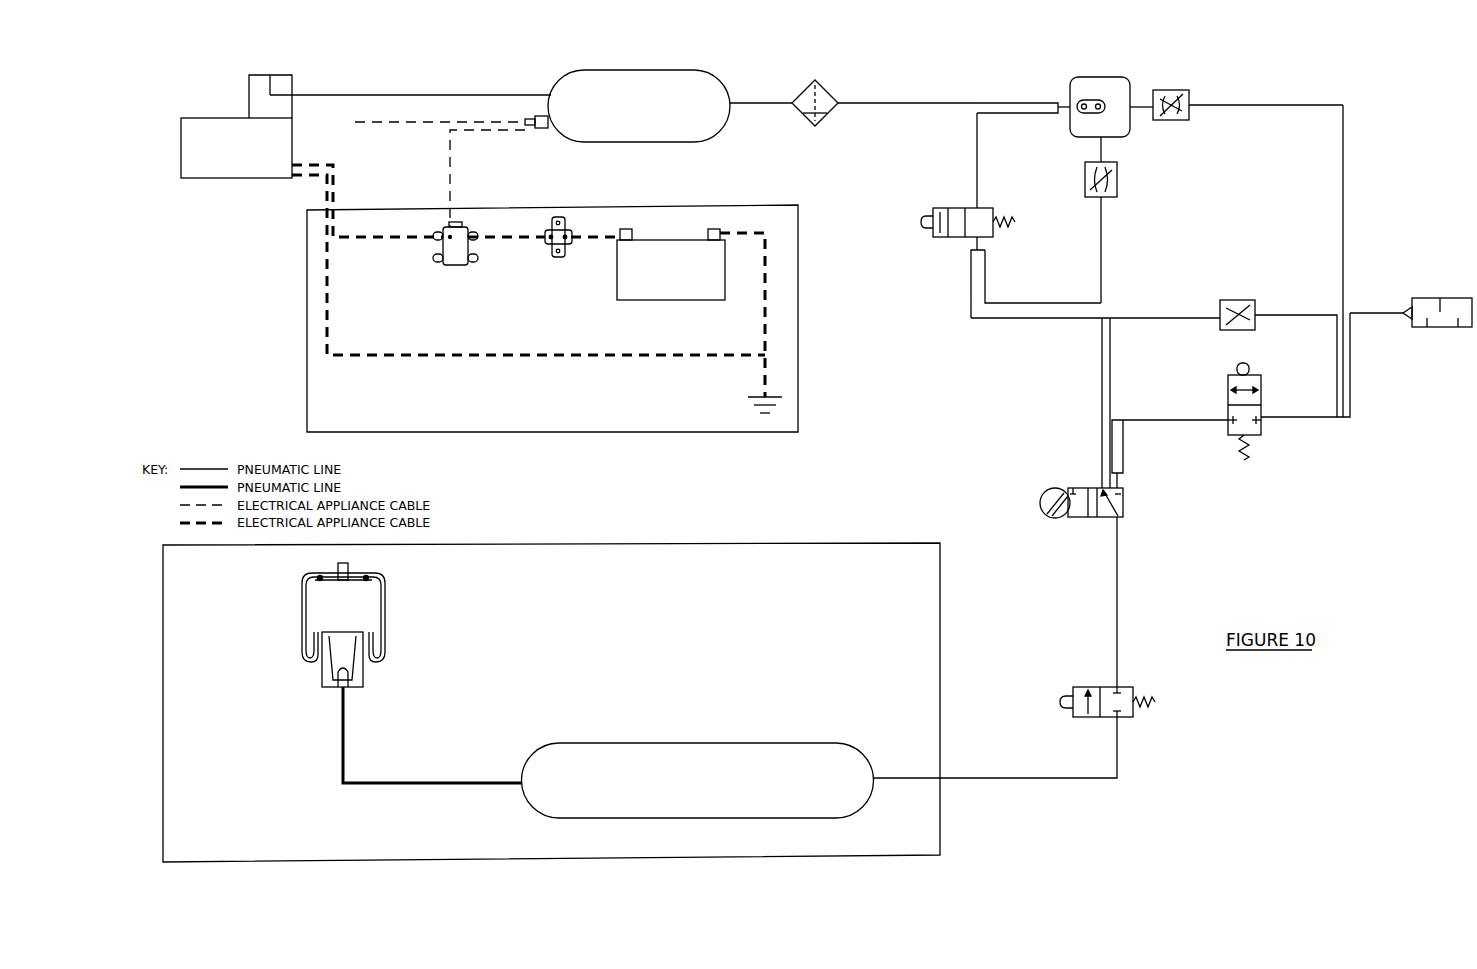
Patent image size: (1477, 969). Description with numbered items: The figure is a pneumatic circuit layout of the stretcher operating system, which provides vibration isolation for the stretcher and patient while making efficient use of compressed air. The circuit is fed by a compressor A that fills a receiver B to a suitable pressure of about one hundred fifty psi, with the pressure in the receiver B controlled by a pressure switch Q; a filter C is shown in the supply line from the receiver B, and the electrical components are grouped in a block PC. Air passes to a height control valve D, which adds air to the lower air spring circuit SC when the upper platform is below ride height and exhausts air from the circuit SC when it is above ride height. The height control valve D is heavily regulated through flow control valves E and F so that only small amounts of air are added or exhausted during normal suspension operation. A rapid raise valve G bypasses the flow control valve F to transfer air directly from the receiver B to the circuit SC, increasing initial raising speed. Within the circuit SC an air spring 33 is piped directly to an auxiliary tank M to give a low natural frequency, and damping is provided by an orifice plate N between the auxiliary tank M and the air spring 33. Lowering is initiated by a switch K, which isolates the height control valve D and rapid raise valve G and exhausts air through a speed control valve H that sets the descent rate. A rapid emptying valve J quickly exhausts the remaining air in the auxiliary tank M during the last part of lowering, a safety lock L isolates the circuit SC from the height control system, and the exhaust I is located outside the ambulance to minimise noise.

The compressor A is at (366, 126).
The receiver B is at (670, 106).
The filter C is at (815, 128).
The height control valve D is at (1101, 77).
The flow control valve E is at (1172, 90).
The flow control valve F is at (1117, 178).
The rapid raise valve G is at (921, 222).
The speed control valve H is at (1237, 300).
The exhaust I is at (1448, 298).
The rapid emptying valve J is at (1262, 383).
The switch K is at (1040, 503).
The safety lock L is at (1060, 702).
The auxiliary tank M is at (698, 780).
The orifice plate N is at (345, 676).
The pressure switch Q is at (540, 131).
The air spring 33 is at (300, 620).
The power circuit PC is at (545, 277).
The lower air spring circuit SC is at (551, 702).